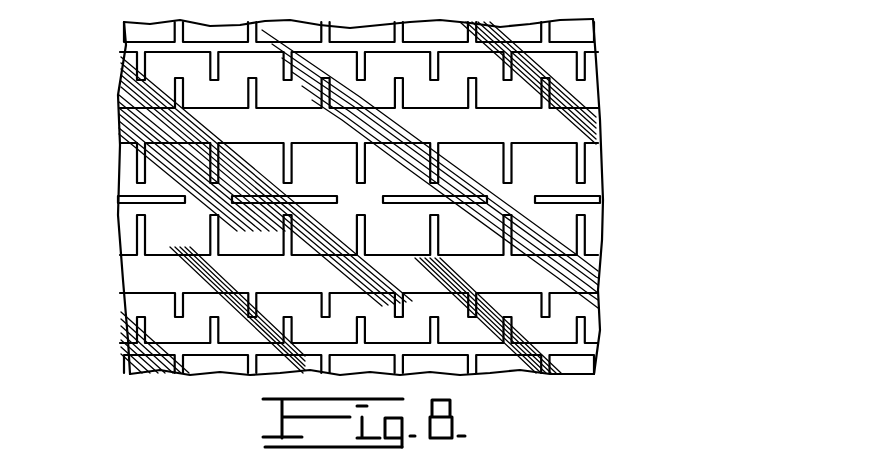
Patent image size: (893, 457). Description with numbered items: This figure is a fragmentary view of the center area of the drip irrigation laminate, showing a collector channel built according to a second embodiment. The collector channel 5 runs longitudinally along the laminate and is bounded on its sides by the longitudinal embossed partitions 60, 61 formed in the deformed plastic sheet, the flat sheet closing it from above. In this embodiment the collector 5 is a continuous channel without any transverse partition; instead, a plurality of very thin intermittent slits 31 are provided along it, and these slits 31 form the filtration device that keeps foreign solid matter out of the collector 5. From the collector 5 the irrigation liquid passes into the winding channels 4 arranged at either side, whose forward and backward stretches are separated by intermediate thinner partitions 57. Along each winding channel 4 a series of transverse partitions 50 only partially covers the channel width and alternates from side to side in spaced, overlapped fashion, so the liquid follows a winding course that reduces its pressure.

The winding channel 4 is at (569, 93).
The collector channel 5 is at (556, 190).
The intermittent slit 31 is at (163, 202).
The transverse partition 50 is at (325, 95).
The intermediate thinner partition 57 is at (122, 44).
The longitudinal embossed partition 60 is at (140, 127).
The longitudinal embossed partition 61 is at (145, 268).